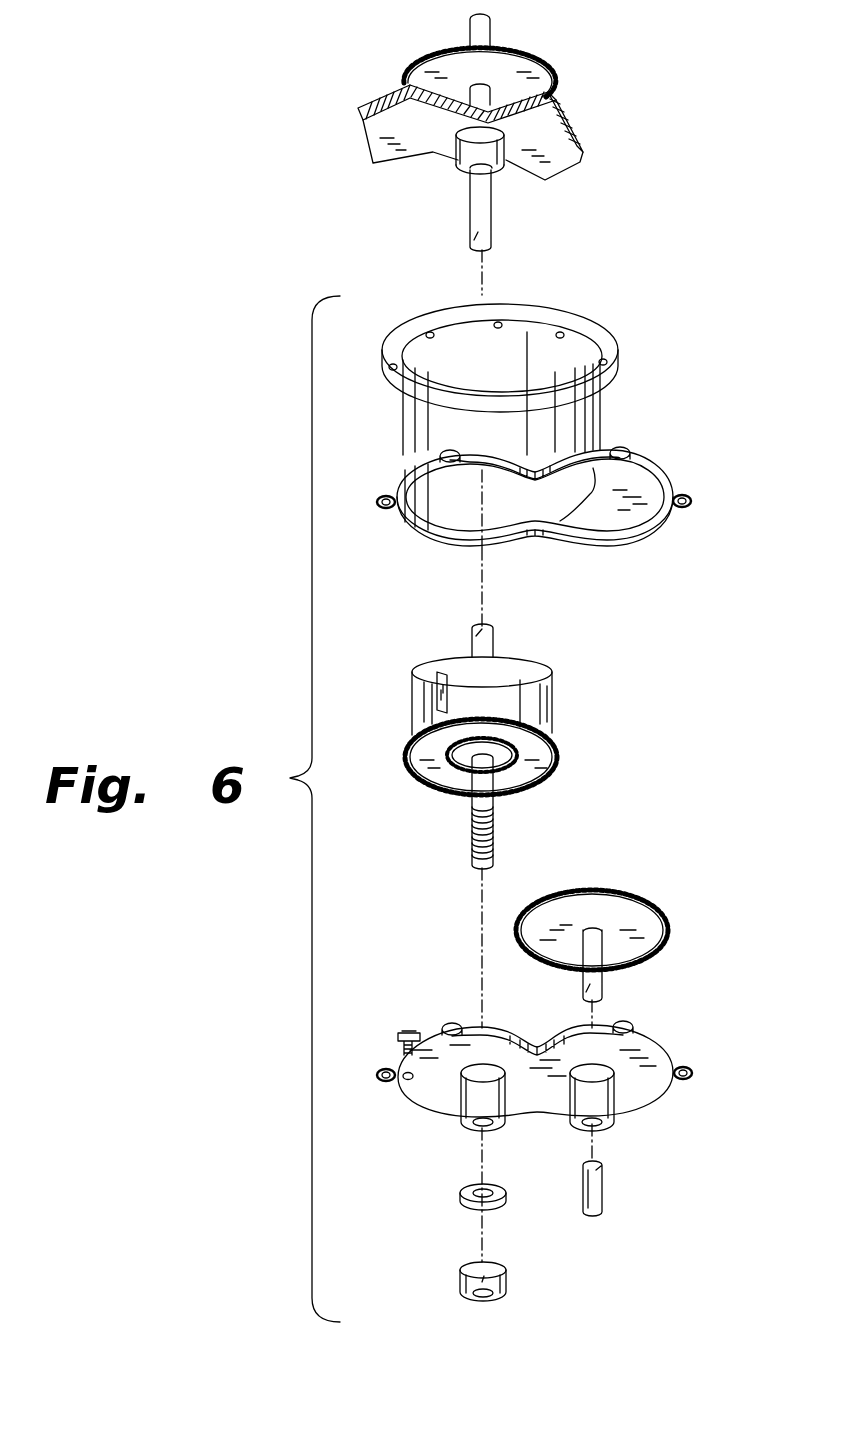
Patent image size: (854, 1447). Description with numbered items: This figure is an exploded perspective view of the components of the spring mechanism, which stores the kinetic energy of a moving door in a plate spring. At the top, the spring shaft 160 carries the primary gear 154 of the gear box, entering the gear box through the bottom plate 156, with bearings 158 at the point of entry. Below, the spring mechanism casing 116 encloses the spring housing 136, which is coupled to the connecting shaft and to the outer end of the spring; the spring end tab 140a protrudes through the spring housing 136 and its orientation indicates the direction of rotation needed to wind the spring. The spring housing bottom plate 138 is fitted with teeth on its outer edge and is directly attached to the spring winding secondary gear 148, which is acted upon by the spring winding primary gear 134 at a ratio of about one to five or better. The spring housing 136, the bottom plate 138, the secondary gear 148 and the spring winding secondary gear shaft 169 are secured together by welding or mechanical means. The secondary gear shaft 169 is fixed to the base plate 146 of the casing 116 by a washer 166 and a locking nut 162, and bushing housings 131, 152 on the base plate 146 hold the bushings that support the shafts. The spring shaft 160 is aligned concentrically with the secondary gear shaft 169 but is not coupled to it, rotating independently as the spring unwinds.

The spring mechanism casing 116 is at (575, 428).
The bushing housing 131 is at (613, 1106).
The spring winding primary gear 134 is at (650, 902).
The spring housing 136 is at (548, 709).
The spring housing bottom plate 138 is at (562, 742).
The spring end tab 140a is at (440, 668).
The base plate 146 is at (658, 1099).
The spring winding secondary gear 148 is at (510, 772).
The bushing housing 152 is at (470, 1105).
The primary gear 154 is at (543, 56).
The bottom plate 156 is at (568, 158).
The bearings 158 is at (458, 167).
The spring shaft 160 is at (487, 212).
The locking nut 162 is at (507, 1279).
The washer 166 is at (473, 1212).
The spring winding secondary gear shaft 169 is at (473, 800).